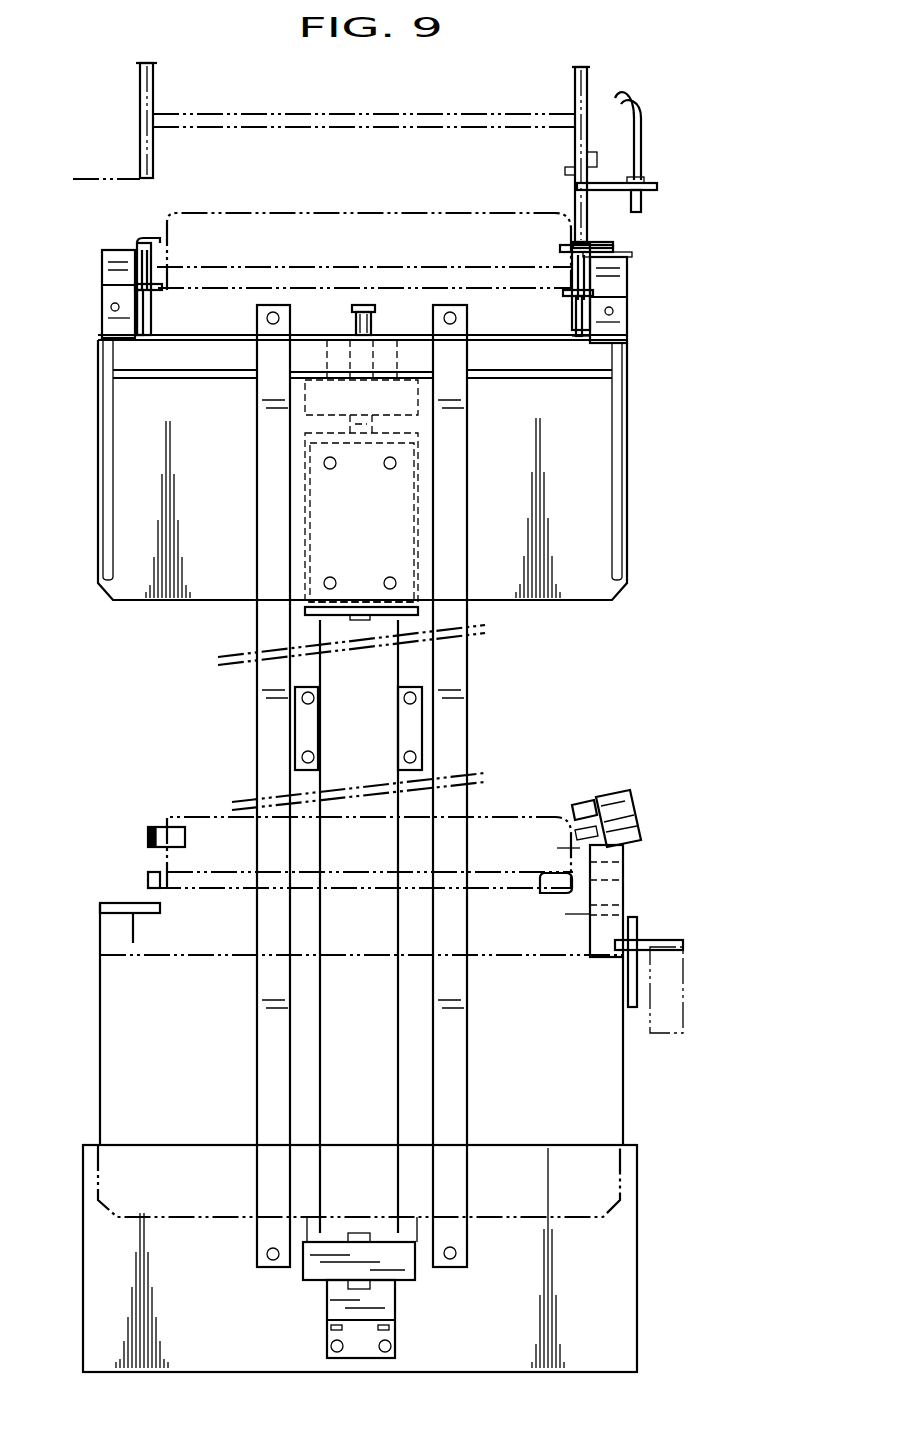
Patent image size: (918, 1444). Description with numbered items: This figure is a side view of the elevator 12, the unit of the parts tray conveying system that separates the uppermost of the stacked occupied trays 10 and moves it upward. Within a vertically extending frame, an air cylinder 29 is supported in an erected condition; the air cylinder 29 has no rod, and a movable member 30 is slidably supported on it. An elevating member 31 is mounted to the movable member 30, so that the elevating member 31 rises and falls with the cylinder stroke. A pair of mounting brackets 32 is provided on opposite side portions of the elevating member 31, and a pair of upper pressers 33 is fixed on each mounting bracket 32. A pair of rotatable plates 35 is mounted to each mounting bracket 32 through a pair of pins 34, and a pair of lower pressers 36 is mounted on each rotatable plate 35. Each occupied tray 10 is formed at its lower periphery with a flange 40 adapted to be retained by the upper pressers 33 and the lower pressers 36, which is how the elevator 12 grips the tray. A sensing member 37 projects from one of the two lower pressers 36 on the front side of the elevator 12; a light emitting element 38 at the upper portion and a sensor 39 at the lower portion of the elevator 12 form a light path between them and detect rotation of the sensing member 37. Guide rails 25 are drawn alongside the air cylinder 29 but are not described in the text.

The occupied tray 10 is at (401, 212).
The elevator 12 is at (668, 132).
The guide rail 25 is at (263, 722).
The air cylinder 29 is at (378, 1080).
The movable member 30 is at (420, 520).
The elevating member 31 is at (140, 602).
The mounting bracket 32 is at (143, 305).
The upper presser 33 is at (152, 240).
The pin 34 is at (111, 308).
The rotatable plate 35 is at (102, 288).
The lower presser 36 is at (160, 290).
The sensing member 37 is at (638, 825).
The light emitting element 38 is at (644, 205).
The sensor 39 is at (634, 918).
The flange 40 is at (414, 285).